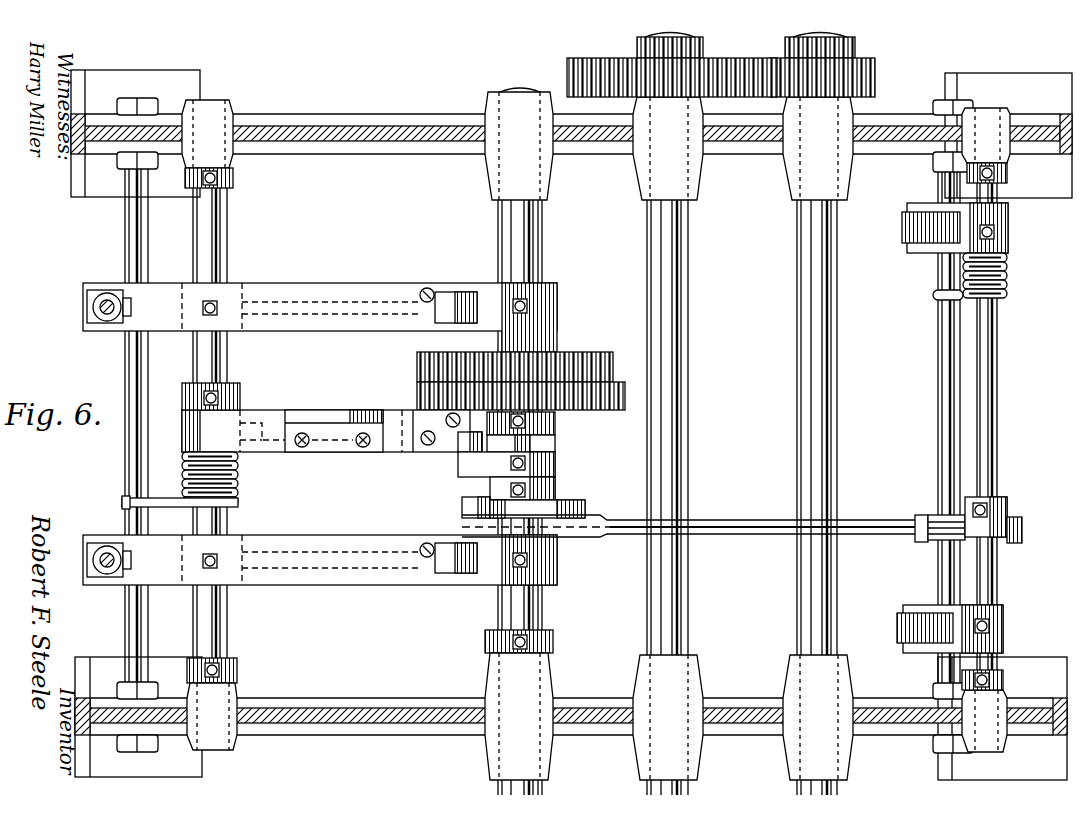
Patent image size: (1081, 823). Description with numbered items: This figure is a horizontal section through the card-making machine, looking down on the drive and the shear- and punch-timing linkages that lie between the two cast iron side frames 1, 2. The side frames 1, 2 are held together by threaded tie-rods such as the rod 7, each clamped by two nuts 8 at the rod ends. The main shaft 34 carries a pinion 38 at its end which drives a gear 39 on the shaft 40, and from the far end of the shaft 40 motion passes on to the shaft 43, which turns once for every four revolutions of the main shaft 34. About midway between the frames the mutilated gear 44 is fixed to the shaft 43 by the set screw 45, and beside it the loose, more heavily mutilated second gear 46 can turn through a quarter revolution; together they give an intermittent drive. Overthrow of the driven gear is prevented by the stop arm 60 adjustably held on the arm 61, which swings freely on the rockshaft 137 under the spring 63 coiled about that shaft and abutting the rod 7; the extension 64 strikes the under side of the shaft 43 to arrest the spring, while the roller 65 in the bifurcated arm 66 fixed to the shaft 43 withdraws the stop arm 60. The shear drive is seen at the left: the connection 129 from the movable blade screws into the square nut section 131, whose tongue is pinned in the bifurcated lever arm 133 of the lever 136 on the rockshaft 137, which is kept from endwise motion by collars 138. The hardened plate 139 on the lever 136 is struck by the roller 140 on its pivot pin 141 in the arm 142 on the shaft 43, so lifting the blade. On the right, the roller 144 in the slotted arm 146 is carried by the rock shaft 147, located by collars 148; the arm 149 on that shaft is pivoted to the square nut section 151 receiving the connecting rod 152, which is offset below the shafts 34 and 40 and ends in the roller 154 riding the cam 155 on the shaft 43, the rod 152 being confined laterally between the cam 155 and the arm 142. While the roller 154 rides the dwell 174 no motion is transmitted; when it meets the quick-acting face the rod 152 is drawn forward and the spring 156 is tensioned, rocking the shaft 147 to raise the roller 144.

The side frame 1 is at (737, 708).
The side frame 2 is at (389, 127).
The tie-rod 7 is at (125, 237).
The nuts 8 is at (143, 107).
The main shaft 34 is at (838, 274).
The pinion 38 is at (875, 80).
The gear 39 is at (597, 66).
The shaft 40 is at (688, 268).
The shaft 43 is at (542, 238).
The gear 44 is at (521, 396).
The set screw 45 is at (526, 421).
The second gear 46 is at (590, 357).
The stop arm 60 is at (336, 410).
The arm 61 is at (326, 417).
The spring 63 is at (185, 480).
The extension 64 is at (556, 443).
The roller 65 is at (458, 448).
The arm 66 is at (506, 476).
The connection 129 is at (107, 320).
The square nut section 131 is at (95, 290).
The lever arm 133 is at (320, 434).
The lever 136 is at (301, 434).
The rockshaft 137 is at (228, 356).
The collars 138 is at (234, 184).
The hardened plate 139 is at (427, 288).
The roller 140 is at (437, 318).
The pivot pin 141 is at (455, 292).
The arm 142 is at (504, 433).
The roller 144 is at (905, 228).
The arm 146 is at (1010, 229).
The rock shaft 147 is at (997, 343).
The collars 148 is at (1008, 175).
The arm 149 is at (1010, 520).
The square nut section 151 is at (940, 515).
The connecting rod 152 is at (695, 522).
The roller 154 is at (462, 503).
The cam 155 is at (585, 510).
The spring 156 is at (1008, 280).
The dwell 174 is at (537, 509).